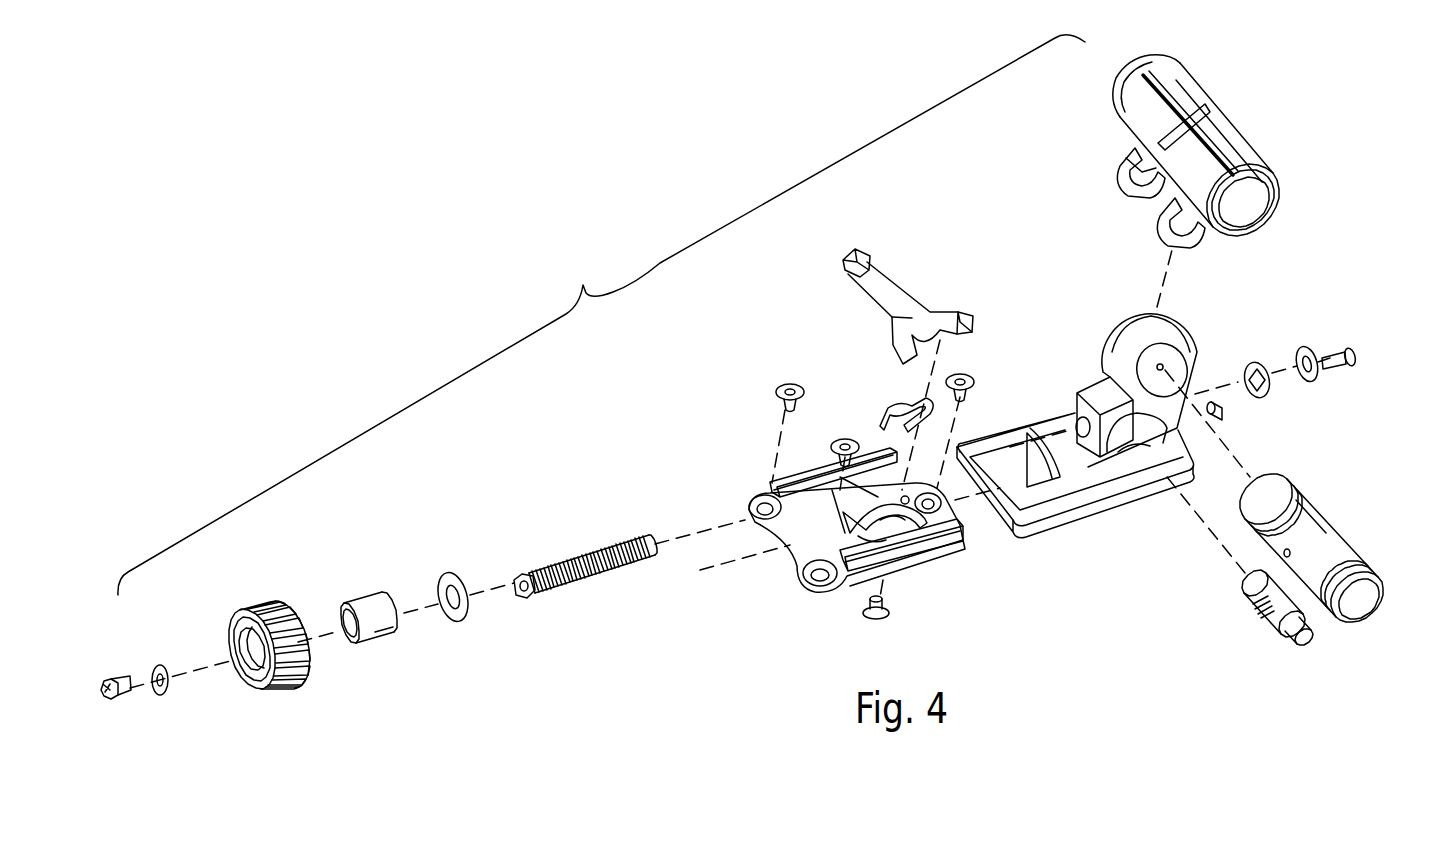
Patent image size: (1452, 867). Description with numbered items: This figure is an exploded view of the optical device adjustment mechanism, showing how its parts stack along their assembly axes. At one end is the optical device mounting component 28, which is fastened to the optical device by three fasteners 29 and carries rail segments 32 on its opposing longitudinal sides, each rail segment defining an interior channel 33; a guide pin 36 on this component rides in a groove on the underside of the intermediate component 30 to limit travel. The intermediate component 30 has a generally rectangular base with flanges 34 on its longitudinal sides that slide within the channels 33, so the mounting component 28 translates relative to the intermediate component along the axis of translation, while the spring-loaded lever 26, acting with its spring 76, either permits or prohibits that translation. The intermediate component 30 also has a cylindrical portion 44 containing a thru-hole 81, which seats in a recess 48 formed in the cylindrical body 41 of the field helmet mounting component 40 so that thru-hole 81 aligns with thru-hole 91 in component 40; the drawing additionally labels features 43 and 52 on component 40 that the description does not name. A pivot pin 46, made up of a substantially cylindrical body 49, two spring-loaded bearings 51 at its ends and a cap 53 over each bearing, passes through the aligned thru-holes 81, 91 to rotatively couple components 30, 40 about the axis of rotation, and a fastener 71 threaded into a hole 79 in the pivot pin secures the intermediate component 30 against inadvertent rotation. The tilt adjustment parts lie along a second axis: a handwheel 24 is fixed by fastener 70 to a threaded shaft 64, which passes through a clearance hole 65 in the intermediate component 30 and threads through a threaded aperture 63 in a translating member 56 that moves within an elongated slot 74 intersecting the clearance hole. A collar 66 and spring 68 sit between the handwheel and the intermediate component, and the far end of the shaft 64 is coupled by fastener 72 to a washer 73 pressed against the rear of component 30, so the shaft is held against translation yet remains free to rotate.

The handwheel 24 is at (236, 620).
The spring-loaded lever 26 is at (842, 260).
The optical device mounting component 28 is at (826, 533).
The fasteners 29 is at (780, 385).
The intermediate component 30 is at (1113, 334).
The rail segments 32 is at (797, 483).
The interior channel 33 is at (752, 503).
The flanges 34 is at (962, 448).
The guide pin 36 is at (863, 617).
The field helmet mounting component 40 is at (1177, 190).
The cylindrical body 41 is at (1232, 112).
The clips 43 is at (1125, 183).
The cylindrical portion 44 is at (1127, 318).
The pivot pin 46 is at (1285, 537).
The recess 48 is at (1115, 166).
The cylindrical body 49 is at (1345, 526).
The bearings 51 is at (1365, 612).
The slot 52 is at (1150, 72).
The cap 53 is at (1284, 471).
The translating member 56 is at (1275, 631).
The threaded aperture 63 is at (1258, 610).
The threaded shaft 64 is at (540, 576).
The clearance hole 65 is at (1078, 425).
The collar 66 is at (365, 601).
The spring 68 is at (449, 579).
The fastener 70 is at (155, 661).
The fastener 71 is at (1223, 412).
The fastener 72 is at (1353, 335).
The washer 73 is at (1255, 362).
The elongated slot 74 is at (1135, 458).
The spring 76 is at (890, 410).
The hole 79 is at (1284, 553).
The thru-hole 81 is at (1177, 366).
The thru-hole 91 is at (1253, 202).